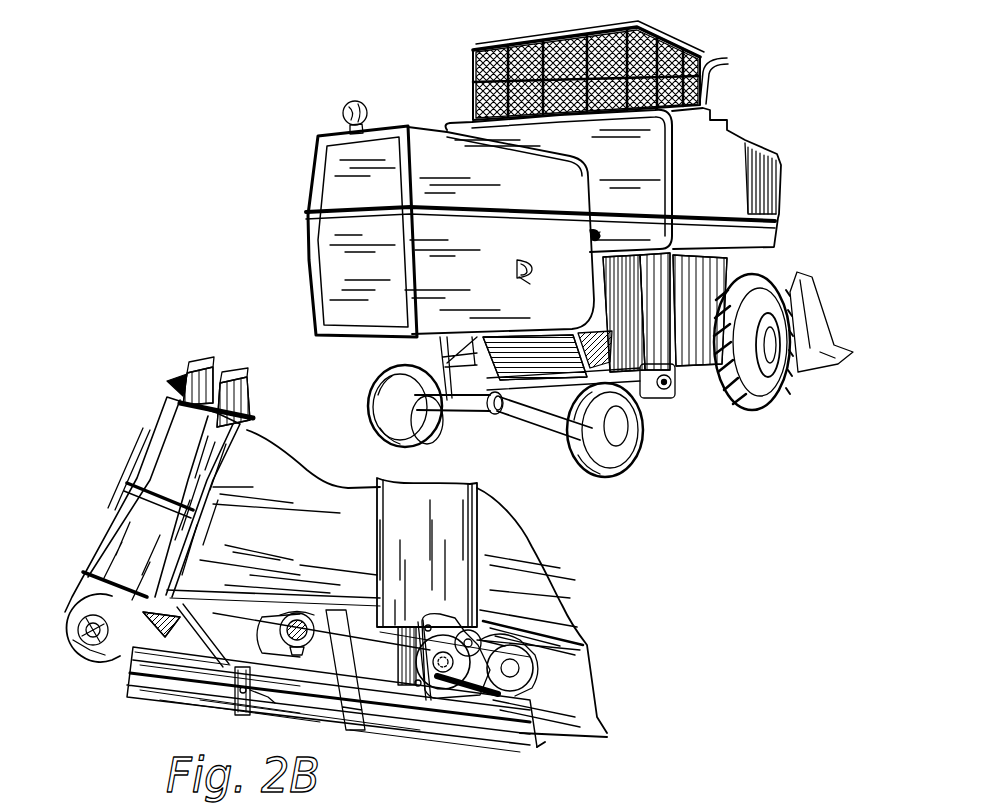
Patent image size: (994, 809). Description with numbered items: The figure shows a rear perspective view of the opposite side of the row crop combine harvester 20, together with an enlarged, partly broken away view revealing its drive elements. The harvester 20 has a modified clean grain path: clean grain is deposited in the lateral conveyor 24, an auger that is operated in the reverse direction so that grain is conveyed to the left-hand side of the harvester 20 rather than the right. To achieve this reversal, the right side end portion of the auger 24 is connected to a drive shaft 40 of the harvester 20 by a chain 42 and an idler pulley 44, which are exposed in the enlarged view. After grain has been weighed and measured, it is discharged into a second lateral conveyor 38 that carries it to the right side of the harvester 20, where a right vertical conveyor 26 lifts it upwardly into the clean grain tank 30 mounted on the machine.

In FIG. 2A, the row crop combine harvester 20 is at (756, 114).
In FIG. 2B, the lateral conveyor 24 is at (445, 690).
In FIG. 2A, the right vertical conveyor 26 is at (677, 307).
In FIG. 2B, the right vertical conveyor 26 is at (173, 490).
In FIG. 2A, the clean grain tank 30 is at (634, 38).
In FIG. 2A, the second lateral conveyor 38 is at (676, 392).
In FIG. 2B, the second lateral conveyor 38 is at (103, 644).
In FIG. 2B, the drive shaft 40 is at (580, 651).
In FIG. 2B, the chain 42 is at (472, 680).
In FIG. 2B, the idler pulley 44 is at (478, 641).